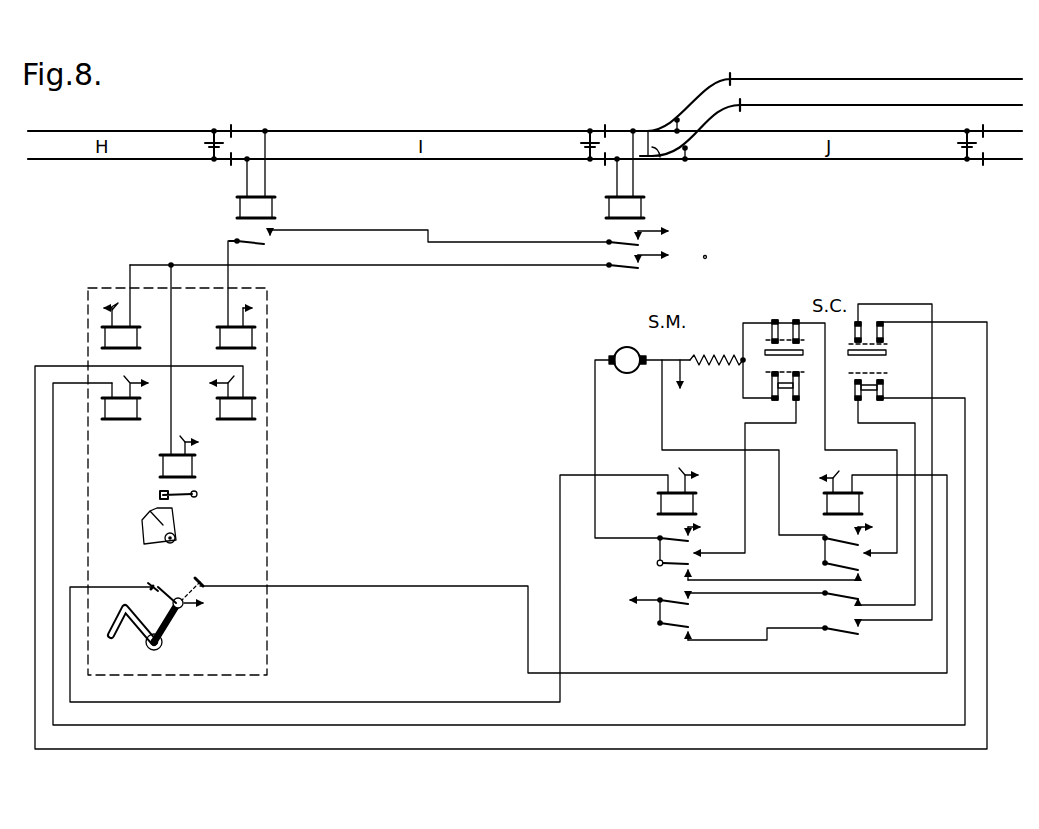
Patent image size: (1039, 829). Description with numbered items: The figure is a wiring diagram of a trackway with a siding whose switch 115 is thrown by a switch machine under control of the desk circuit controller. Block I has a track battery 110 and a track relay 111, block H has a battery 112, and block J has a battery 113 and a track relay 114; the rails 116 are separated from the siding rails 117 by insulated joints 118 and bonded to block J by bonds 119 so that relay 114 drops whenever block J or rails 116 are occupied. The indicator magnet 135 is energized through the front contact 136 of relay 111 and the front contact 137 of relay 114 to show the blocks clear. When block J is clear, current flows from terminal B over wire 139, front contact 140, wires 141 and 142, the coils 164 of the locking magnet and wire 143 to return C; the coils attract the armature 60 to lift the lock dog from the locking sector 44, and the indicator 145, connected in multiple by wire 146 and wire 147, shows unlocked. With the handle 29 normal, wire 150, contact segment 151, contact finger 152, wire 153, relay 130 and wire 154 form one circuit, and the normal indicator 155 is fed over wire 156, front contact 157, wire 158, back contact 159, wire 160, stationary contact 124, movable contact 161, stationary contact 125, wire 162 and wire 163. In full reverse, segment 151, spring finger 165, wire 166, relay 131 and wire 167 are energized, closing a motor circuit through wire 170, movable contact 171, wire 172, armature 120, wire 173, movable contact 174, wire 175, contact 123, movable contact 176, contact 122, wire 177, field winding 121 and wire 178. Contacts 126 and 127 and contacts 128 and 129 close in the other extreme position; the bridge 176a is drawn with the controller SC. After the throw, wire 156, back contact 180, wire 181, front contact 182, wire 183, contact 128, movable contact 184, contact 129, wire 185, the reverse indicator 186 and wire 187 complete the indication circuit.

The handle 29 is at (136, 630).
The locking sector 44 is at (178, 523).
The armature 60 is at (160, 493).
The track battery 110 is at (584, 146).
The track relay 111 is at (256, 173).
The battery 112 is at (208, 146).
The battery 113 is at (961, 146).
The track relay 114 is at (625, 173).
The siding switch 115 is at (656, 160).
The rails 116 is at (690, 99).
The rails of the siding 117 is at (840, 84).
The insulated joints 118 is at (734, 82).
The bonds 119 is at (681, 121).
The armature 120 is at (618, 352).
The field winding 121 is at (713, 355).
The contact 122 is at (771, 390).
The contact 123 is at (800, 395).
The stationary contact 124 is at (855, 397).
The stationary contact 125 is at (884, 388).
The contact 126 is at (776, 331).
The contact 127 is at (800, 333).
The stationary contact 128 is at (858, 333).
The stationary contact 129 is at (884, 333).
The relay 130 is at (677, 503).
The relay 131 is at (843, 503).
The indicator magnet 135 is at (242, 294).
The front contact 136 is at (252, 241).
The front contact 137 is at (627, 242).
The wire 139 is at (655, 259).
The front contact 140 is at (656, 269).
The wire 141 is at (508, 267).
The wire 142 is at (172, 350).
The wire 143 is at (194, 437).
The indicator 145 is at (121, 328).
The wire 146 is at (130, 266).
The wire 147 is at (113, 301).
The wire 150 is at (186, 606).
The contact segment 151 is at (168, 586).
The contact finger 152 is at (153, 584).
The wire 153 is at (385, 702).
The wire 154 is at (686, 473).
The normal indicator 155 is at (121, 401).
The wire 156 is at (645, 606).
The front contact 157 is at (670, 603).
The wire 158 is at (740, 594).
The back contact 159 is at (832, 598).
The wire 160 is at (910, 565).
The movable contact 161 is at (866, 392).
The wire 162 is at (54, 428).
The wire 163 is at (135, 382).
The coils 164 is at (177, 466).
The spring finger 165 is at (203, 583).
The wire 166 is at (345, 586).
The wire 167 is at (835, 473).
The wire 170 is at (875, 515).
The movable contact 171 is at (825, 537).
The wire 172 is at (665, 451).
The wire 173 is at (596, 437).
The movable contact 174 is at (672, 537).
The wire 175 is at (746, 545).
The movable contact 176 is at (788, 392).
The contact bridge 176a is at (788, 354).
The wire 177 is at (748, 393).
The wire 178 is at (681, 381).
The back contact 180 is at (672, 630).
The wire 181 is at (720, 641).
The front contact 182 is at (832, 635).
The wire 183 is at (897, 620).
The movable contact 184 is at (887, 353).
The wire 185 is at (56, 365).
The reverse indicator 186 is at (236, 408).
The wire 187 is at (223, 382).